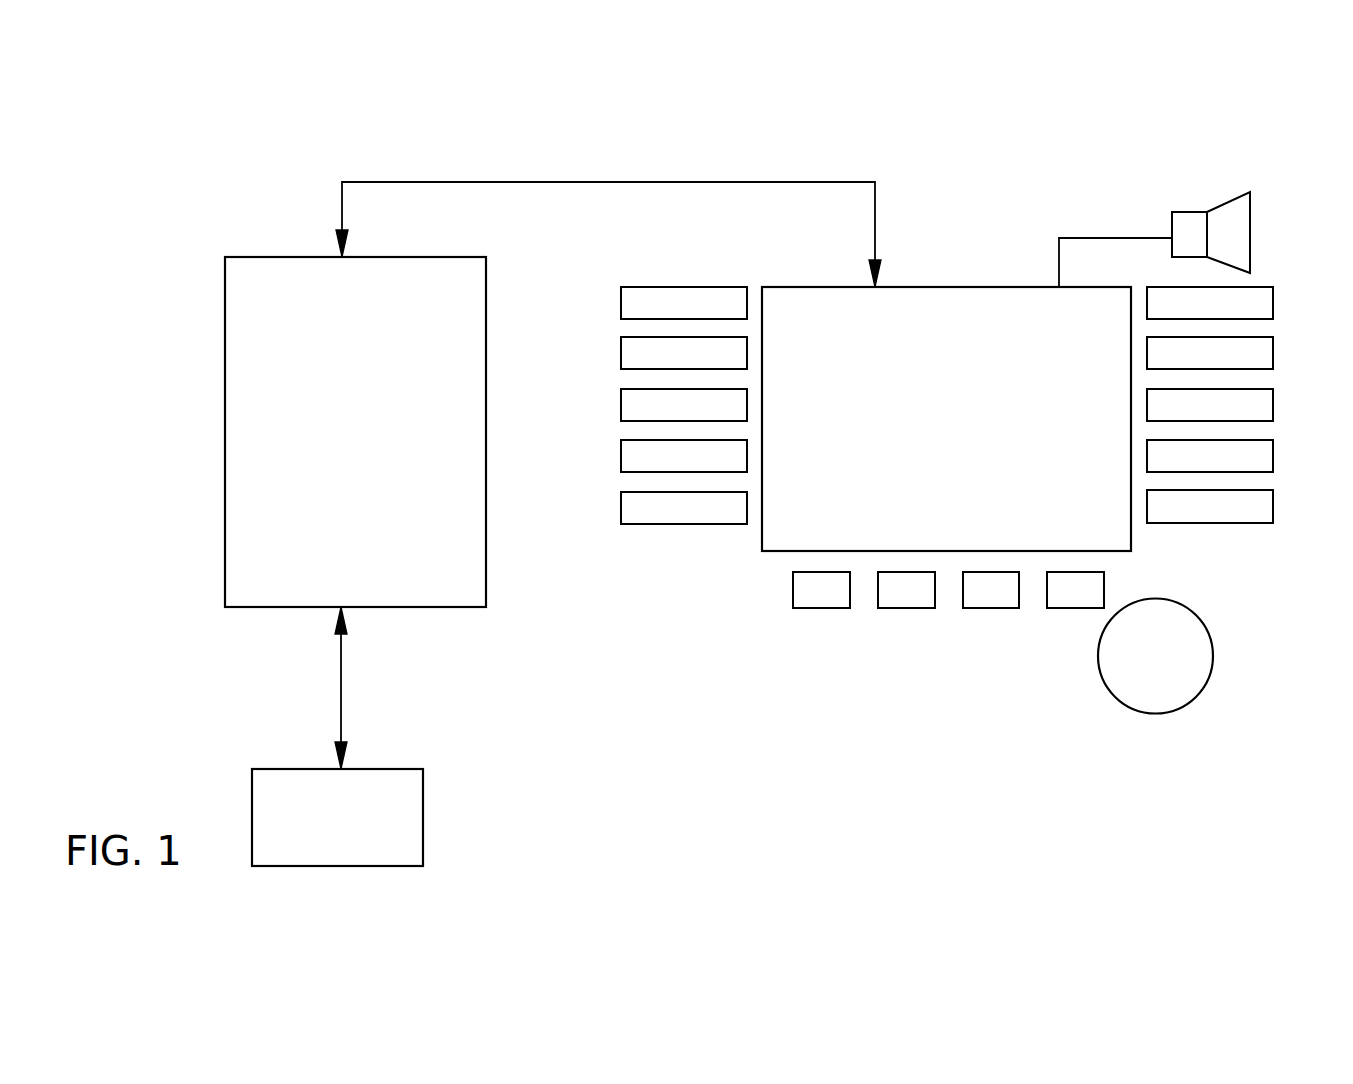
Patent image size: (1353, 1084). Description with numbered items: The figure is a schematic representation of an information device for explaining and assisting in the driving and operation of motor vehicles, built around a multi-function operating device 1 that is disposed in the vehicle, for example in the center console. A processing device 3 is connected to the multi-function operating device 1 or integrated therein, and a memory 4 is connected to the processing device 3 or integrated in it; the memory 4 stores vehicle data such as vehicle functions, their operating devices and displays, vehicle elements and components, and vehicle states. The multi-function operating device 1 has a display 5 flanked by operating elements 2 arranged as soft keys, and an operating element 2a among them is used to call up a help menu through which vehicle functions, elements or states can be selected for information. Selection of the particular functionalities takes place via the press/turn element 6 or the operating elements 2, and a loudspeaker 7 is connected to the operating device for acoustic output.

The multi-function operating device 1 is at (1138, 183).
The operating device 2 is at (1261, 501).
The operating element 2a is at (814, 597).
The processing device 3 is at (473, 484).
The memory 4 is at (408, 816).
The display 5 is at (923, 296).
The press/turn element 6 is at (1117, 674).
The loudspeaker 7 is at (1235, 237).